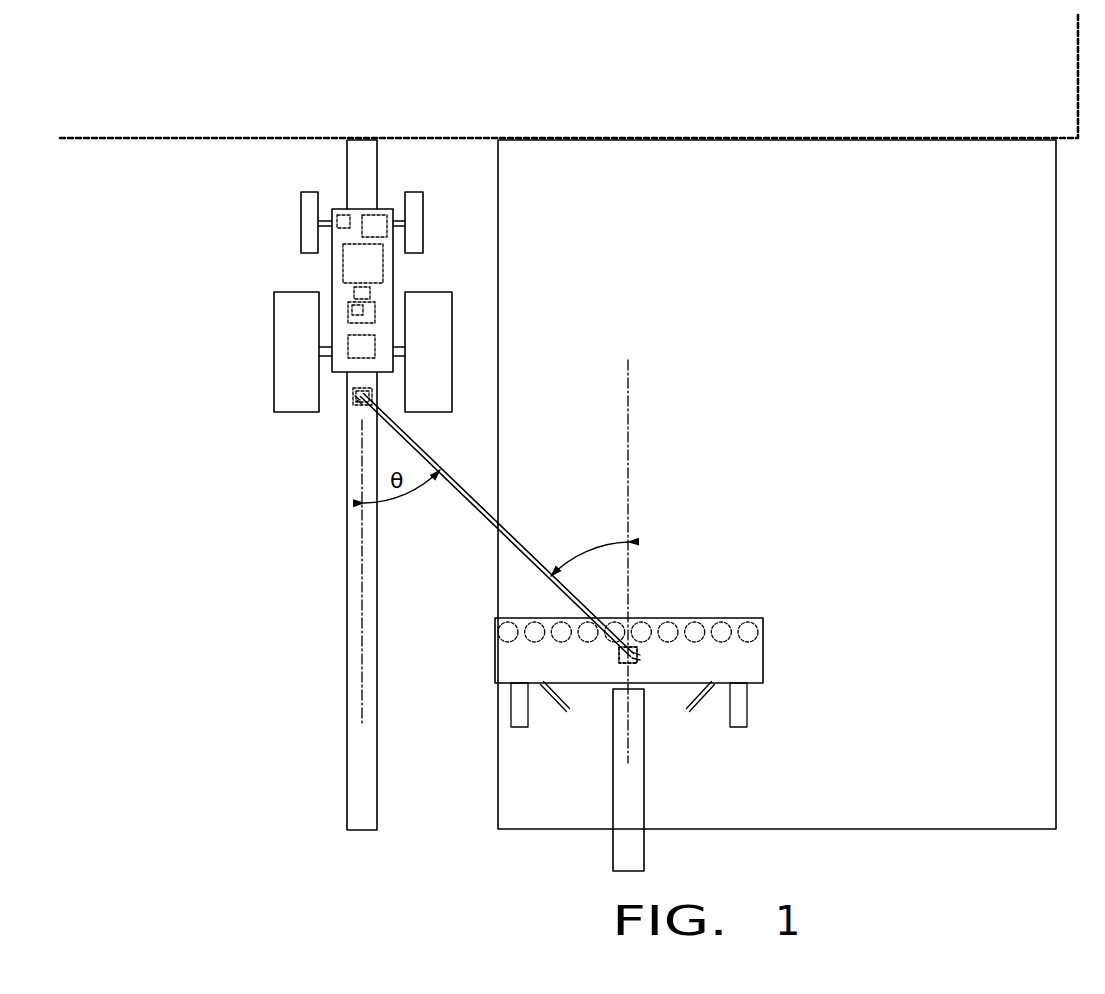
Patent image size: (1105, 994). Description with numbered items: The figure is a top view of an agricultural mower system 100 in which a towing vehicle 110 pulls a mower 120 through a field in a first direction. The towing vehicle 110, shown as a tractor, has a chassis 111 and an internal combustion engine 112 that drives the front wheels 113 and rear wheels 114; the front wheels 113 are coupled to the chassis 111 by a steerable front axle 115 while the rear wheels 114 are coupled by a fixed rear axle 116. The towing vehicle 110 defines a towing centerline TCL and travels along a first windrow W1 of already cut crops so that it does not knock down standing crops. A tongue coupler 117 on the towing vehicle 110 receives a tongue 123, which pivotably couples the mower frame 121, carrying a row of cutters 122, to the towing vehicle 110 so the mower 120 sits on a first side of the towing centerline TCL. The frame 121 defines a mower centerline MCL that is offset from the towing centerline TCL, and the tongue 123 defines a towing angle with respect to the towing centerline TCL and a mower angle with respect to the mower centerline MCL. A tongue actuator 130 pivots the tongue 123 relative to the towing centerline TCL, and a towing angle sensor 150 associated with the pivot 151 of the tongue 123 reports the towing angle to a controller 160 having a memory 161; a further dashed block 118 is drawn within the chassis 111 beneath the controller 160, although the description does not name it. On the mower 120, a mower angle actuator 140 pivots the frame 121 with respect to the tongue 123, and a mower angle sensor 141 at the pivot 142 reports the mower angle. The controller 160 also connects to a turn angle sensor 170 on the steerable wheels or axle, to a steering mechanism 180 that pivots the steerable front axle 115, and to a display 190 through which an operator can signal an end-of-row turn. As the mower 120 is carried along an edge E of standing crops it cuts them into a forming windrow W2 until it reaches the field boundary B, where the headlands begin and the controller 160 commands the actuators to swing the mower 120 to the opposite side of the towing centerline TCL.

The agricultural mower system 100 is at (262, 745).
The towing vehicle 110 is at (392, 469).
The chassis 111 is at (332, 275).
The internal combustion engine 112 is at (382, 257).
The front wheels 113 is at (305, 225).
The rear wheels 114 is at (275, 402).
The steerable front axle 115 is at (326, 218).
The fixed rear axle 116 is at (327, 357).
The tongue coupler 117 is at (355, 404).
The controller 118 is at (375, 342).
The mower 120 is at (668, 615).
The frame 121 is at (763, 653).
The cutters 122 is at (710, 618).
The tongue 123 is at (472, 510).
The tongue actuator 130 is at (355, 400).
The mower angle actuator 140 is at (636, 663).
The mower angle sensor 141 is at (640, 652).
The pivot 142 is at (640, 660).
The towing angle sensor 150 is at (372, 390).
The pivot 151 is at (363, 385).
The controller 160 is at (348, 318).
The memory 161 is at (352, 310).
The turn angle sensor 170 is at (342, 214).
The steering mechanism 180 is at (385, 214).
The display 190 is at (370, 293).
The boundary B is at (698, 138).
The edge E is at (498, 214).
The mower centerline MCL is at (632, 433).
The towing centerline TCL is at (360, 557).
The first windrow W1 is at (347, 800).
The forming windrow W2 is at (644, 835).